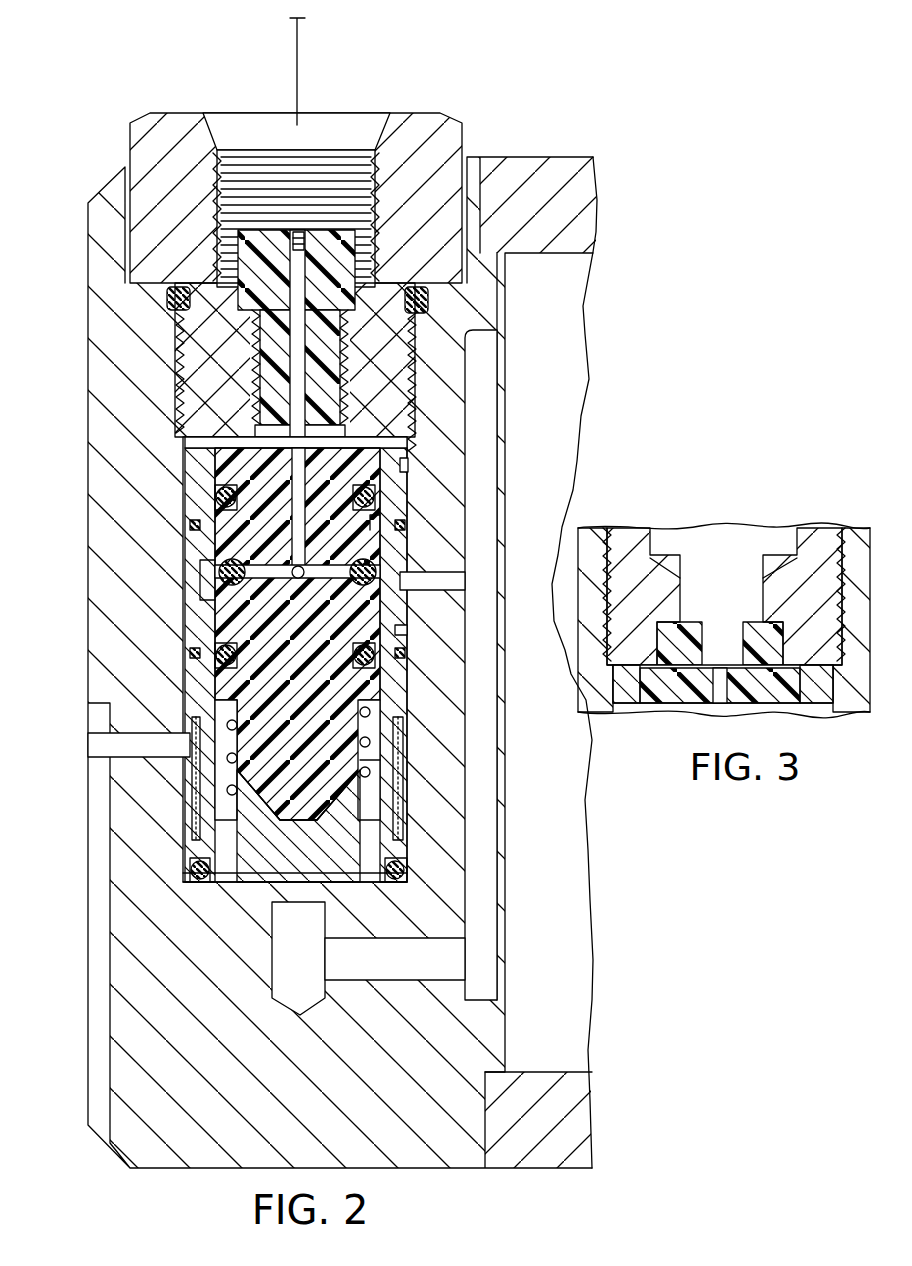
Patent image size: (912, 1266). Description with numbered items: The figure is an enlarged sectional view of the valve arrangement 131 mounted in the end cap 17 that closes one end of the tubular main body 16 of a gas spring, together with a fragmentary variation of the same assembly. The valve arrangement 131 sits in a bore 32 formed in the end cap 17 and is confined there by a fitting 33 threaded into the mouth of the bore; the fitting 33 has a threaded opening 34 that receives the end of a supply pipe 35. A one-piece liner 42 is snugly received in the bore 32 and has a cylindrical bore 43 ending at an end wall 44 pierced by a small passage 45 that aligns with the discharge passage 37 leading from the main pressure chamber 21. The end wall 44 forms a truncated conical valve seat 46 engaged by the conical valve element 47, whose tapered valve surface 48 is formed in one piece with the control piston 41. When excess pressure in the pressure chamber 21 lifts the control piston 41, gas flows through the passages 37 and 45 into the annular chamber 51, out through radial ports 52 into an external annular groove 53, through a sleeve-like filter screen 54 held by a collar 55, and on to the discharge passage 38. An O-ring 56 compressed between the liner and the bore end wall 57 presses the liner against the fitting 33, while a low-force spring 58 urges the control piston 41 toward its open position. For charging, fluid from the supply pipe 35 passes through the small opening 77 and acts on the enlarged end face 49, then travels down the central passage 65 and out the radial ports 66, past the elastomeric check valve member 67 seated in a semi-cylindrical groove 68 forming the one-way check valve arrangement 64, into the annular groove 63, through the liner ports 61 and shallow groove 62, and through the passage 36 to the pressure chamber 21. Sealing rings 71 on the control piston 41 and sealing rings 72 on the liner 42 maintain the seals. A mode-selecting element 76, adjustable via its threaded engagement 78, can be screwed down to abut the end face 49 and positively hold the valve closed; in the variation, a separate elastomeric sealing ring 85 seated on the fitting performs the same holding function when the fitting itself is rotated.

In FIG. 2, the main body 16 is at (577, 1122).
In FIG. 2, the end cap 17 is at (140, 1045).
In FIG. 2, the main pressure chamber 21 is at (567, 302).
In FIG. 2, the bore 32 is at (408, 470).
In FIG. 2, the fitting 33 is at (422, 125).
In FIG. 2, the threaded opening 34 is at (255, 173).
In FIG. 3, the threaded opening 34 is at (775, 625).
In FIG. 2, the supply pipe 35 is at (297, 70).
In FIG. 2, the passage 36 is at (453, 590).
In FIG. 2, the passage 37 is at (415, 968).
In FIG. 2, the passage 38 is at (125, 750).
In FIG. 2, the control piston 41 is at (372, 683).
In FIG. 3, the control piston 41 is at (790, 690).
In FIG. 2, the liner 42 is at (400, 632).
In FIG. 2, the cylindrical bore 43 is at (372, 525).
In FIG. 2, the end wall 44 is at (245, 868).
In FIG. 2, the passage 45 is at (290, 880).
In FIG. 2, the valve seat 46 is at (195, 780).
In FIG. 2, the valve element 47 is at (335, 762).
In FIG. 2, the valve surface 48 is at (395, 805).
In FIG. 2, the upper end face 49 is at (245, 432).
In FIG. 2, the annular chamber 51 is at (215, 708).
In FIG. 2, the radial ports 52 is at (385, 745).
In FIG. 2, the annular groove 53 is at (400, 787).
In FIG. 2, the filter screen 54 is at (200, 865).
In FIG. 2, the collar 55 is at (397, 852).
In FIG. 2, the O-ring 56 is at (405, 877).
In FIG. 2, the end wall 57 is at (395, 895).
In FIG. 2, the low-force spring 58 is at (232, 762).
In FIG. 2, the ports 61 is at (188, 605).
In FIG. 2, the annular groove 62 is at (205, 622).
In FIG. 2, the annular groove 63 is at (385, 565).
In FIG. 2, the one-way check valve arrangement 64 is at (260, 592).
In FIG. 2, the passage 65 is at (297, 470).
In FIG. 2, the ports 66 is at (235, 565).
In FIG. 2, the check valve member 67 is at (205, 580).
In FIG. 2, the annular groove 68 is at (365, 590).
In FIG. 2, the sealing rings 71 is at (225, 497).
In FIG. 2, the sealing rings 72 is at (405, 527).
In FIG. 2, the mode-selecting element 76 is at (320, 250).
In FIG. 2, the small opening 77 is at (293, 287).
In FIG. 2, the threaded engagement 78 is at (335, 385).
In FIG. 3, the sealing ring 85 is at (750, 635).
In FIG. 2, the valve arrangement 131 is at (158, 513).